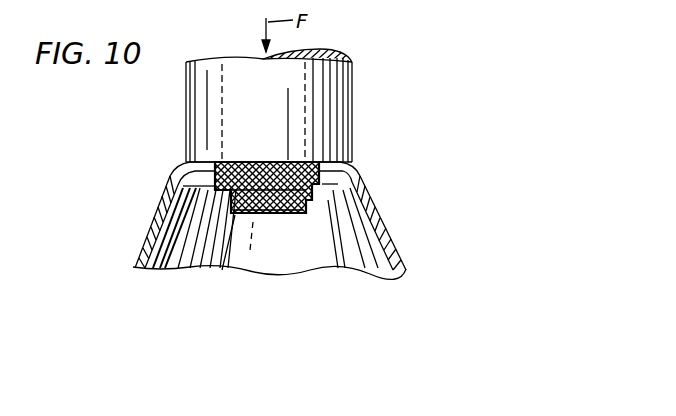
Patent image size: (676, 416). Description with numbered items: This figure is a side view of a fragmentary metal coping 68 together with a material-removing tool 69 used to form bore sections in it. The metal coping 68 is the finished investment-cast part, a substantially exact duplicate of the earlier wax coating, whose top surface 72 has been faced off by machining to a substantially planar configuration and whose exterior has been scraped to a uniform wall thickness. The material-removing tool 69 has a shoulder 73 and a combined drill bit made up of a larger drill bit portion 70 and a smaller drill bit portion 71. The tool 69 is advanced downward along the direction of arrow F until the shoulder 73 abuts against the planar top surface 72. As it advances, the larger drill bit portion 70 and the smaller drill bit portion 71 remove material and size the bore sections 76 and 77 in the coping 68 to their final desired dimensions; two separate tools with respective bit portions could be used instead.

The metal coping 68 is at (392, 237).
The material-removing tool 69 is at (333, 95).
The larger drill bit portion 70 is at (308, 160).
The smaller drill bit portion 71 is at (292, 216).
The top surface 72 is at (190, 163).
The shoulder 73 is at (212, 162).
The bore section 76 is at (180, 185).
The bore section 77 is at (236, 215).